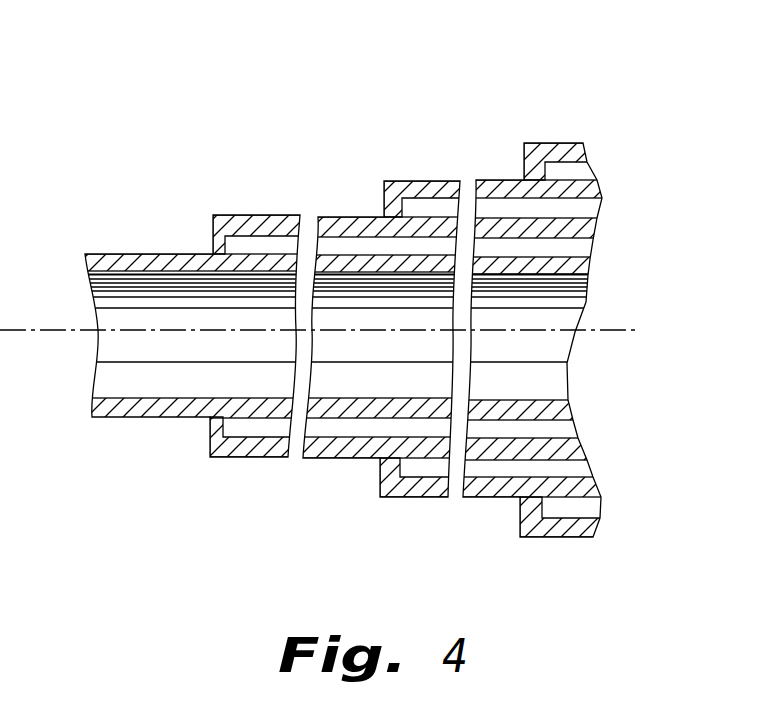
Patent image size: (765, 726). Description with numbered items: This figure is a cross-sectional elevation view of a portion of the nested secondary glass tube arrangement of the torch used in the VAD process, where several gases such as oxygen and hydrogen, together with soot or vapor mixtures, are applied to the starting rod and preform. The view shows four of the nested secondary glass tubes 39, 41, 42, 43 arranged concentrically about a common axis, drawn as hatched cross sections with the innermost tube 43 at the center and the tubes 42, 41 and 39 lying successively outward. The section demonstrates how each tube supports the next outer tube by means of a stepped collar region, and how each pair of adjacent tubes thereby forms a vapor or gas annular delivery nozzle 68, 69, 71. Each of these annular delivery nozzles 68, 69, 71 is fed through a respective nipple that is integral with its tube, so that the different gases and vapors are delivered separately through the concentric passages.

The secondary glass tube 39 is at (567, 150).
The secondary glass tube 41 is at (427, 181).
The secondary glass tube 42 is at (273, 217).
The secondary glass tube 43 is at (152, 253).
The annular delivery nozzle 68 is at (242, 425).
The annular delivery nozzle 69 is at (417, 470).
The annular delivery nozzle 71 is at (558, 510).